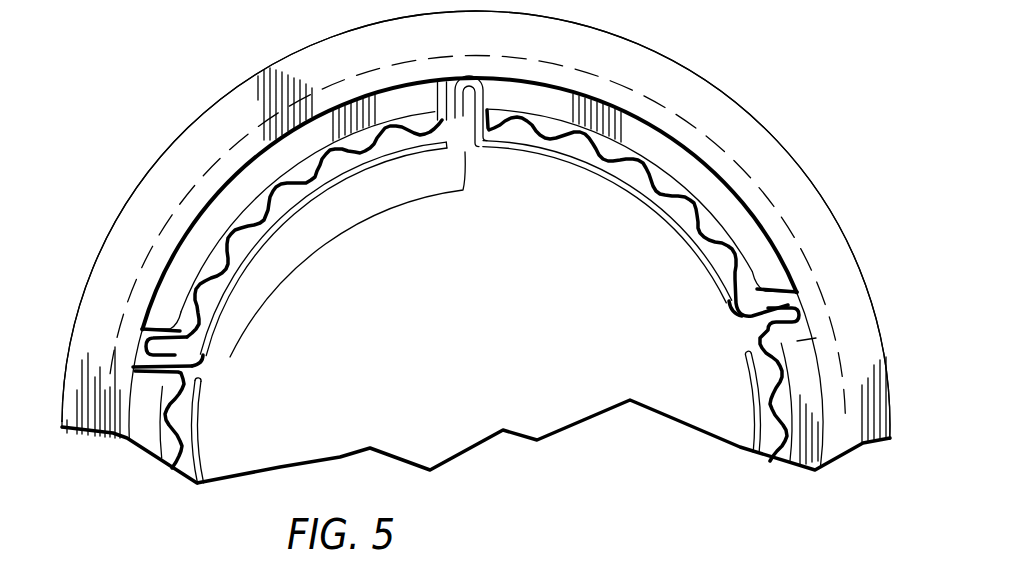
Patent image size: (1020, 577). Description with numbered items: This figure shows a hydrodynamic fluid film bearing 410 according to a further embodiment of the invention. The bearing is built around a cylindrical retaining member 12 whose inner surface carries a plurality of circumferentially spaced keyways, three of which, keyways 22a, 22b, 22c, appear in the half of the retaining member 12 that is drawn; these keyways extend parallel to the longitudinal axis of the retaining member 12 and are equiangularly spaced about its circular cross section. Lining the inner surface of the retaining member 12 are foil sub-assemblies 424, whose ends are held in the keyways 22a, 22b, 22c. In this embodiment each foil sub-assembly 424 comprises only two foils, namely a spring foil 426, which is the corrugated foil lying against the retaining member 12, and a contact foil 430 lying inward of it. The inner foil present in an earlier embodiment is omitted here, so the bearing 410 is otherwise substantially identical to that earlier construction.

The cylindrical retaining member 12 is at (748, 138).
The hydrodynamic fluid film bearing 410 is at (813, 195).
The keyway 22a is at (138, 330).
The keyway 22b is at (463, 80).
The keyway 22c is at (800, 303).
The spring foil 426 is at (233, 250).
The contact foil 430 is at (477, 152).
The foil sub-assembly 424 is at (338, 236).